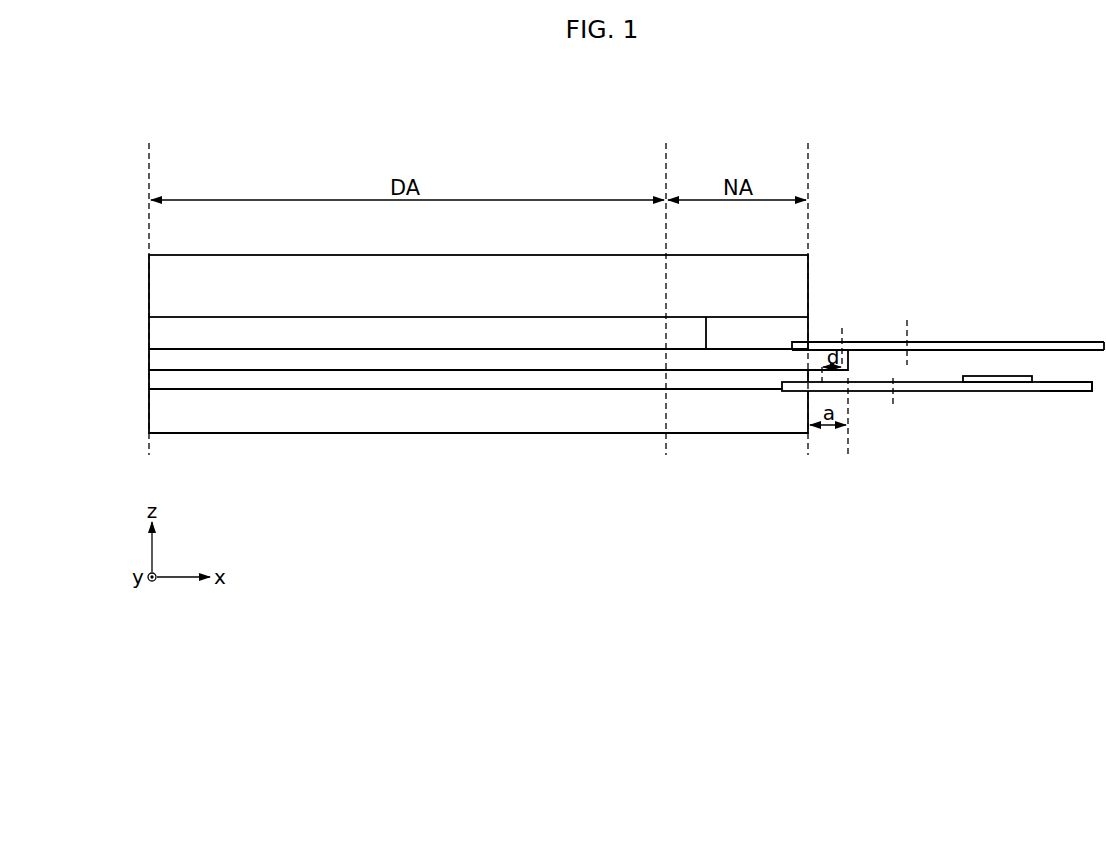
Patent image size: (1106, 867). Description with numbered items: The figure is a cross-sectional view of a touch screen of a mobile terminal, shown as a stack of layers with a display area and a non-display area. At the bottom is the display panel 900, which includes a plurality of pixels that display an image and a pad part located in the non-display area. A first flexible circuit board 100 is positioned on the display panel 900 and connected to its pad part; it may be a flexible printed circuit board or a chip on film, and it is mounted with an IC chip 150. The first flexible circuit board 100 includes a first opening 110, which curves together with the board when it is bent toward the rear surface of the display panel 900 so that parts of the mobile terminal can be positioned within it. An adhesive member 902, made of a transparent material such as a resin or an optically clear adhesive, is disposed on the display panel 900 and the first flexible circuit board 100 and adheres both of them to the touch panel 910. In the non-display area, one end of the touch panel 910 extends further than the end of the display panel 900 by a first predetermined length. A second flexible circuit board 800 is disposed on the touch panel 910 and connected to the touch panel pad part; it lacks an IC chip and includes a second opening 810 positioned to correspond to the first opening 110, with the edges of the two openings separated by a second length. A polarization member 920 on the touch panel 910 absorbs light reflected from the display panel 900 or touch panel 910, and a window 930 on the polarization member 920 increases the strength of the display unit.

The window 930 is at (149, 272).
The polarization member 920 is at (149, 327).
The touch panel 910 is at (149, 358).
The adhesive member 902 is at (149, 382).
The display panel 900 is at (149, 418).
The second opening 810 is at (880, 339).
The second flexible circuit board 800 is at (1013, 339).
The first opening 110 is at (871, 401).
The IC chip 150 is at (997, 384).
The first flexible circuit board 100 is at (1059, 403).